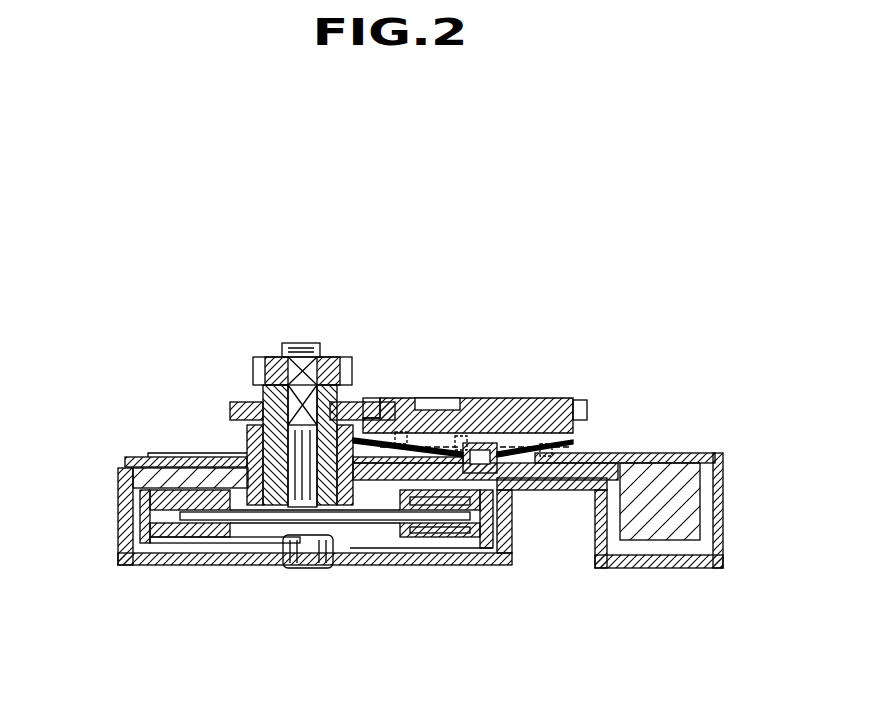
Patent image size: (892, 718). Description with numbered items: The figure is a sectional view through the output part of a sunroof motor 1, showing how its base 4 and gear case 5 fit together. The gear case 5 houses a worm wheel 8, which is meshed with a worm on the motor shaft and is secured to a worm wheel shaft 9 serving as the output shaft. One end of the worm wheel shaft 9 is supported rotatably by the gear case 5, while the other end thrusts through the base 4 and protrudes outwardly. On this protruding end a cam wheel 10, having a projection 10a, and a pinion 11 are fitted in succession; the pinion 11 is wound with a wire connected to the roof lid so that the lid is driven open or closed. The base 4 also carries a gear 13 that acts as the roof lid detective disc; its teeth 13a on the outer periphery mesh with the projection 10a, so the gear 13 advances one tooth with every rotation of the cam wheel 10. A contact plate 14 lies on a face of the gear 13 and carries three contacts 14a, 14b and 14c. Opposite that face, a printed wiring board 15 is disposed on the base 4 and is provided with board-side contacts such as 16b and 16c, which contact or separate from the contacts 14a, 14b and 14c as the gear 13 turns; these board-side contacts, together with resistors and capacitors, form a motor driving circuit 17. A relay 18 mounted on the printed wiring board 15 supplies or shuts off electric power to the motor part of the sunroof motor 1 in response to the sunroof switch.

The sunroof motor 1 is at (497, 293).
The base 4 is at (120, 470).
The gear case 5 is at (137, 565).
The worm wheel 8 is at (198, 540).
The worm wheel shaft 9 is at (300, 342).
The cam wheel 10 is at (250, 404).
The projection 10a is at (372, 398).
The pinion 11 is at (265, 355).
The gear 13 is at (555, 398).
The teeth 13a is at (580, 398).
The contact plate 14 is at (438, 432).
The contact 14a is at (462, 435).
The contact 14b is at (546, 456).
The contact 14c is at (399, 432).
The printed wiring board 15 is at (135, 457).
The board-side contact 16b is at (412, 490).
The board-side contact 16c is at (488, 430).
The motor driving circuit 17 is at (160, 455).
The relay 18 is at (660, 530).